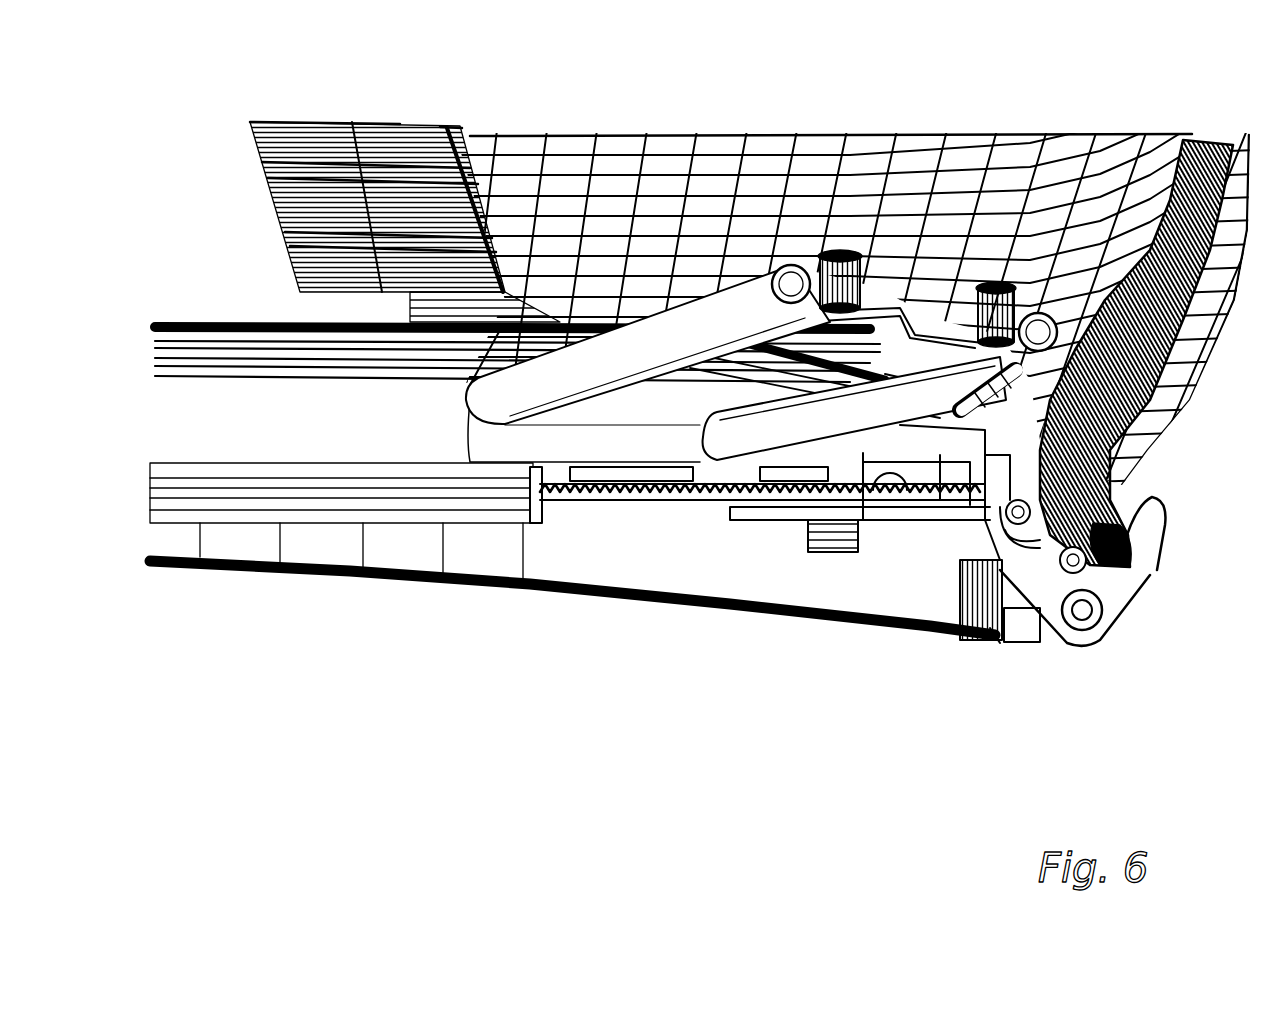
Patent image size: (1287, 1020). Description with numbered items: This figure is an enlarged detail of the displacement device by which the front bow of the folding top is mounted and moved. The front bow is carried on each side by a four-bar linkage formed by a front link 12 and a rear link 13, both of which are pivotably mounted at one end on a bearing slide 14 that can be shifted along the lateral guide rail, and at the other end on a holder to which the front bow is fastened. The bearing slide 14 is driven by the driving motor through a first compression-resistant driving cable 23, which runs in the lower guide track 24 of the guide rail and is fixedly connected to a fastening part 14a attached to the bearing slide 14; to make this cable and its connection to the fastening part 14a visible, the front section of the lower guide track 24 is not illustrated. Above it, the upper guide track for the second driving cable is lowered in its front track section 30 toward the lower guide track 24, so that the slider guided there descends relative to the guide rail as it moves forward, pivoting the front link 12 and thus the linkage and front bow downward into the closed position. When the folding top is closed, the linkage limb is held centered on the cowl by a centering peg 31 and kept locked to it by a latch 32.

The front link 12 is at (902, 408).
The rear link 13 is at (621, 347).
The bearing slide 14 is at (618, 427).
The fastening part 14a is at (868, 452).
The first compression-resistant driving cable 23 is at (692, 502).
The lower guide track 24 is at (547, 528).
The front track section 30 is at (806, 372).
The centering peg 31 is at (1123, 543).
The latch 32 is at (1117, 590).